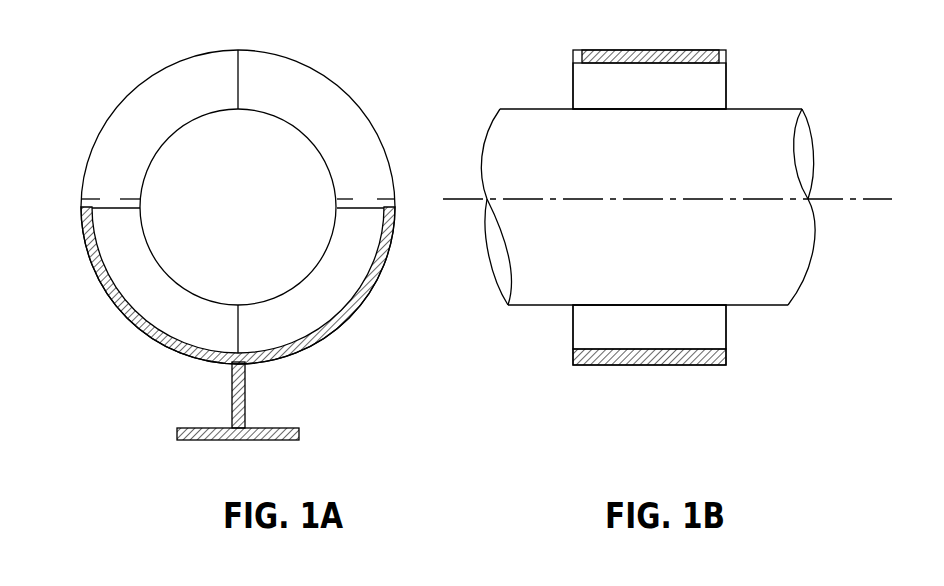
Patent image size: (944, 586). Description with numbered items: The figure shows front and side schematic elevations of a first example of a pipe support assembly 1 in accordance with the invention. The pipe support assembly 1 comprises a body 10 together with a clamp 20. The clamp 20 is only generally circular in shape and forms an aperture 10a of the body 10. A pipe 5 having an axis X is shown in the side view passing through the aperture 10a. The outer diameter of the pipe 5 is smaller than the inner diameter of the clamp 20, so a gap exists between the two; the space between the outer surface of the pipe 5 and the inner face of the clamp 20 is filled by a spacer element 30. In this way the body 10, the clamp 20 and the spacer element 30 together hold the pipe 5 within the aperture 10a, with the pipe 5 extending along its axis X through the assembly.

In FIG. 1A, the pipe support assembly 1 is at (211, 187).
In FIG. 1B, the pipe support assembly 1 is at (588, 188).
In FIG. 1B, the pipe 5 is at (756, 109).
In FIG. 1A, the body 10 is at (232, 400).
In FIG. 1A, the aperture 10a is at (273, 223).
In FIG. 1A, the clamp 20 is at (83, 247).
In FIG. 1B, the clamp 20 is at (703, 366).
In FIG. 1A, the spacer element 30 is at (308, 308).
In FIG. 1B, the spacer element 30 is at (597, 334).
In FIG. 1B, the axis x is at (876, 200).